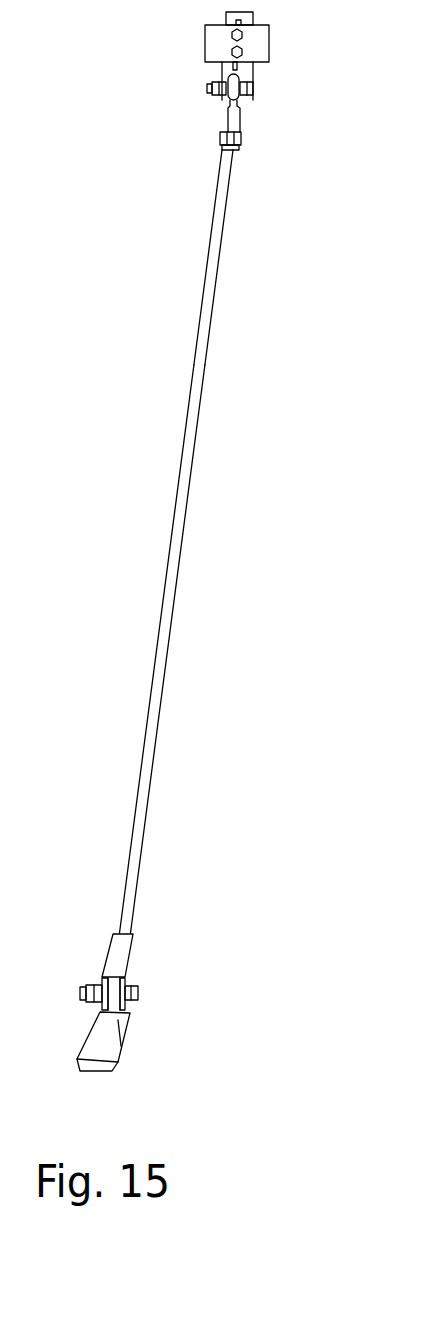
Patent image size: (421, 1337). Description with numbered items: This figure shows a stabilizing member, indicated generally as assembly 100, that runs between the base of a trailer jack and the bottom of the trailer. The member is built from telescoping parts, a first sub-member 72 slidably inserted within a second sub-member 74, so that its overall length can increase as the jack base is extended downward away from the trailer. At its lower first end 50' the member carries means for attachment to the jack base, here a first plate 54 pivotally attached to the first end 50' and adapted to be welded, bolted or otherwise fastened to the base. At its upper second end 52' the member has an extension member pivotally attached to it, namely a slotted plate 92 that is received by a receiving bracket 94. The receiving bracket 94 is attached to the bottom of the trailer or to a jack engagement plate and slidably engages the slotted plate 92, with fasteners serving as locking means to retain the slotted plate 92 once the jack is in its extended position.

The tie-down assembly 100 is at (237, 570).
The slotted plate 92 is at (255, 13).
The receiving bracket 94 is at (270, 53).
The second end 52' is at (268, 135).
The second sub-member 74 is at (213, 267).
The first sub-member 72 is at (193, 470).
The first end 50' is at (138, 968).
The first plate 54 is at (127, 1040).